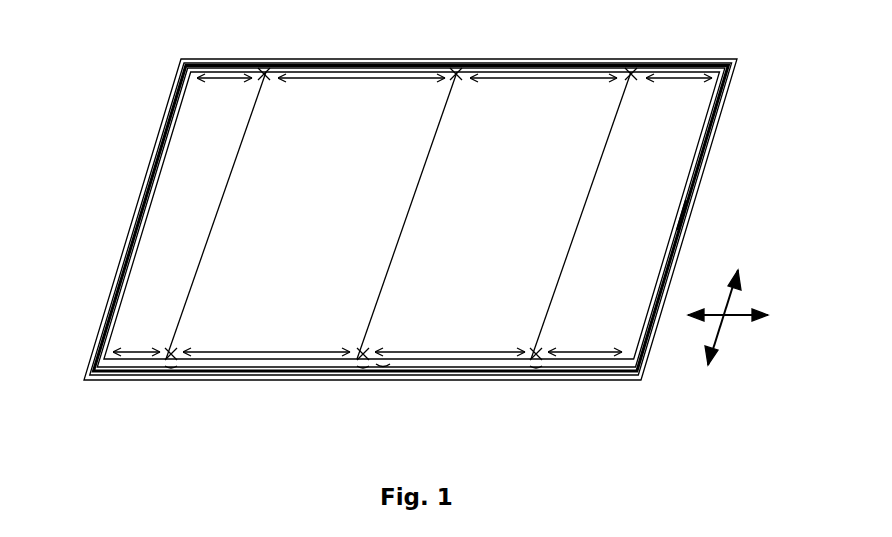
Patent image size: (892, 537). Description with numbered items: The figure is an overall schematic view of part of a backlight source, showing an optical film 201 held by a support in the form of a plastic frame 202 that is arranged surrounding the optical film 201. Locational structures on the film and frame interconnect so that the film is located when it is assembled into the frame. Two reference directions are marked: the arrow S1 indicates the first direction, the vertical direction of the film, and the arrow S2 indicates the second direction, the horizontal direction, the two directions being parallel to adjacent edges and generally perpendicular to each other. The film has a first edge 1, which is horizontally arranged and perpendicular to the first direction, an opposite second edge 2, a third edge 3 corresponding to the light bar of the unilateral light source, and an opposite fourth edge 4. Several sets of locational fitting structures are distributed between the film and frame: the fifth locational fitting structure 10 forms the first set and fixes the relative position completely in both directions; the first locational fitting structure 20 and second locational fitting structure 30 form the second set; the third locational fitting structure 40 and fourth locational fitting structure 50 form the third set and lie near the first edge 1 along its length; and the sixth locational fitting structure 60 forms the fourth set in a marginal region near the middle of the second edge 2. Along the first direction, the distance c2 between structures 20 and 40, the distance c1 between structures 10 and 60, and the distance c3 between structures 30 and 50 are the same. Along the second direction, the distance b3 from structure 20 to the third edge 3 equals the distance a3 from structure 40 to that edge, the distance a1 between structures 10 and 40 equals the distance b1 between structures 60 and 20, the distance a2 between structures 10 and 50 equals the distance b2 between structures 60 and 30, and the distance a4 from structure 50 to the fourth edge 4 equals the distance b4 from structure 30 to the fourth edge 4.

The first edge 1 is at (470, 64).
The second edge 2 is at (383, 368).
The third edge 3 is at (150, 212).
The fourth edge 4 is at (683, 212).
The fifth locational fitting structure 10 is at (456, 68).
The first locational fitting structure 20 is at (176, 368).
The second locational fitting structure 30 is at (539, 368).
The third locational fitting structure 40 is at (266, 70).
The fourth locational fitting structure 50 is at (633, 68).
The sixth locational fitting structure 60 is at (361, 368).
The optical film 201 is at (175, 163).
The plastic frame 202 is at (170, 109).
The distance a1 is at (343, 78).
The distance a2 is at (527, 78).
The distance a3 is at (213, 78).
The distance a4 is at (680, 78).
The distance b1 is at (254, 352).
The distance b2 is at (456, 352).
The distance b3 is at (138, 358).
The distance b4 is at (598, 352).
The distance c1 is at (435, 137).
The distance c2 is at (203, 258).
The distance c3 is at (595, 178).
The arrow S1 is at (737, 317).
The arrow S2 is at (738, 330).